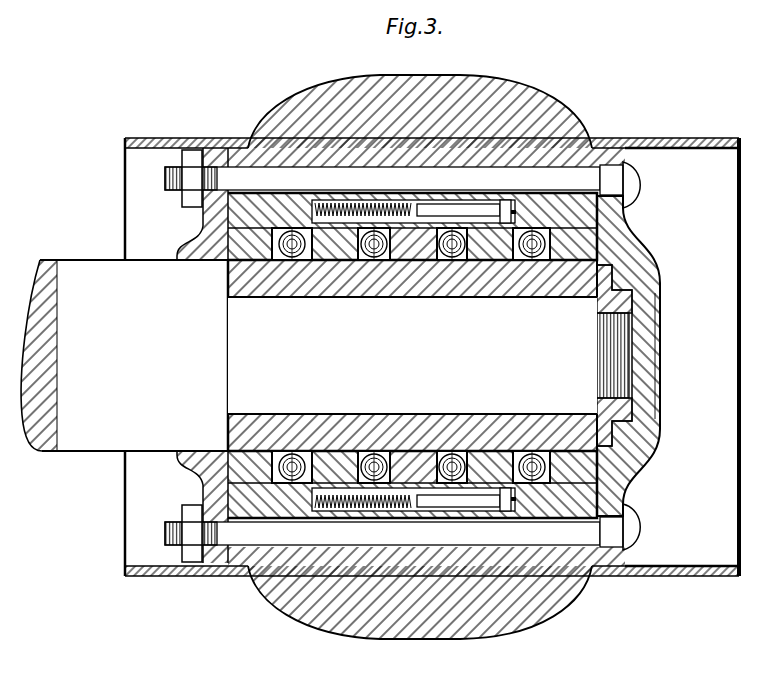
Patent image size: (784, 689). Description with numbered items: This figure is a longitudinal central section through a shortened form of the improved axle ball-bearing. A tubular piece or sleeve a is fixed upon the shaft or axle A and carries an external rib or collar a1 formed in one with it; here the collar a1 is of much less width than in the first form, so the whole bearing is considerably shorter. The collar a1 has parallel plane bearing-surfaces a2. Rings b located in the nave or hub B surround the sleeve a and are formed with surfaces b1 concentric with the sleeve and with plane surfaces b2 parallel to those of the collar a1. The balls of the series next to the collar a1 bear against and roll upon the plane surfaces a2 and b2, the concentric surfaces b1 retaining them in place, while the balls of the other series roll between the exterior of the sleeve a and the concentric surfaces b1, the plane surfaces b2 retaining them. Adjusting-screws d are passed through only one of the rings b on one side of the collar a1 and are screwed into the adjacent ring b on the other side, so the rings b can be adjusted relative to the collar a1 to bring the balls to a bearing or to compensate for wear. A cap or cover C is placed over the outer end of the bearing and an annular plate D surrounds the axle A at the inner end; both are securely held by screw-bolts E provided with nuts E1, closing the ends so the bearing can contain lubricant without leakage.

The shaft or axle A is at (309, 355).
The nave or hub B is at (432, 357).
The cap or cover C is at (628, 356).
The annular plate D is at (203, 233).
The screw-bolts E is at (402, 356).
The nuts E1 is at (200, 201).
The tubular piece or sleeve a is at (430, 355).
The rib or collar a1 is at (437, 243).
The plane bearing-surfaces a2 is at (437, 258).
The rings b is at (412, 355).
The concentric surfaces b1 is at (556, 355).
The plane surfaces b2 is at (272, 240).
The adjusting-screws d is at (414, 355).